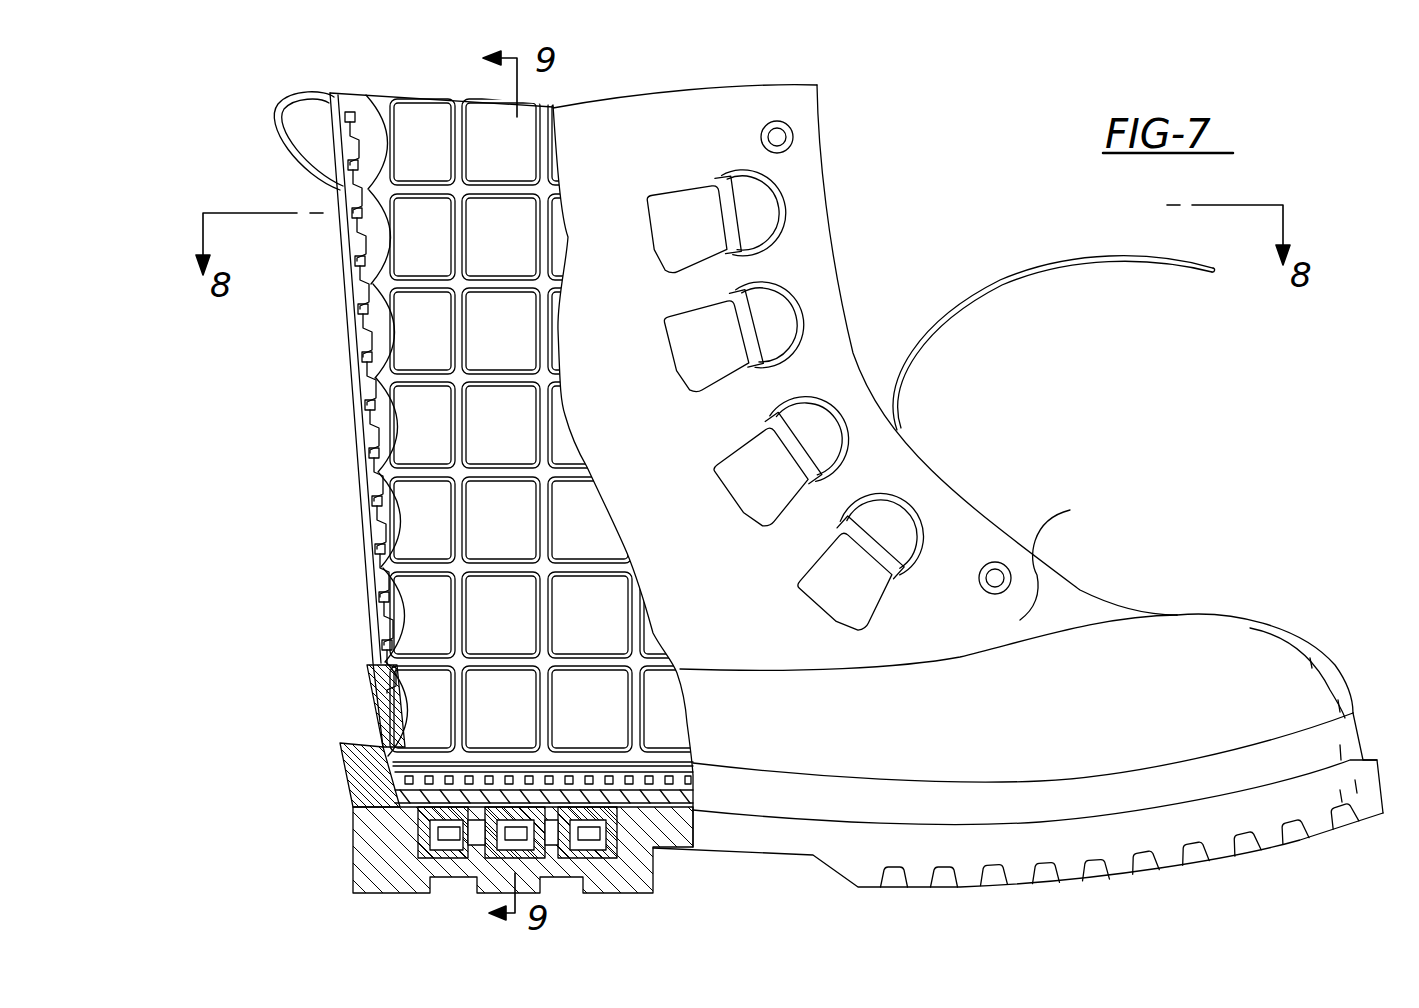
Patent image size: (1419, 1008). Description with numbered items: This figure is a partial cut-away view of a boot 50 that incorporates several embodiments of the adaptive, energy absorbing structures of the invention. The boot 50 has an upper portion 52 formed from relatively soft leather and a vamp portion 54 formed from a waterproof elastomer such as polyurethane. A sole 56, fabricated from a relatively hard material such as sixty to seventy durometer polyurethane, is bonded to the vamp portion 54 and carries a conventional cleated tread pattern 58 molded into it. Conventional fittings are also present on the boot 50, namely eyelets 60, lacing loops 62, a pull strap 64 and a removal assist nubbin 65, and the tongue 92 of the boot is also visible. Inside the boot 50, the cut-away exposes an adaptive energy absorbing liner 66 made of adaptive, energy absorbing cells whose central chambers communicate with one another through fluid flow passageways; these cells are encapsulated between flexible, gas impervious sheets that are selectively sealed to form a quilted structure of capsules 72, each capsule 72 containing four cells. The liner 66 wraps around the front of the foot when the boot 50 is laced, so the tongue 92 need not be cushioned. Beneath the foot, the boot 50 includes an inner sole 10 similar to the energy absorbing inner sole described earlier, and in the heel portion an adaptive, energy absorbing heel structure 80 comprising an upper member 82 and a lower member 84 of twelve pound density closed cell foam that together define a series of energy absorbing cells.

The inner sole 10 is at (460, 793).
The boot 50 is at (804, 78).
The upper portion 52 is at (963, 537).
The vamp portion 54 is at (1183, 628).
The sole 56 is at (845, 848).
The cleated tread pattern 58 is at (1093, 870).
The eyelets 60 is at (793, 137).
The lacing loops 62 is at (783, 208).
The pull strap 64 is at (277, 107).
The removal assist nubbin 65 is at (340, 763).
The adaptive energy absorbing liner 66 is at (404, 92).
The capsules 72 is at (498, 621).
The adaptive energy absorbing heel structure 80 is at (632, 860).
The upper member 82 is at (418, 817).
The lower member 84 is at (418, 847).
The tongue 92 is at (1137, 257).